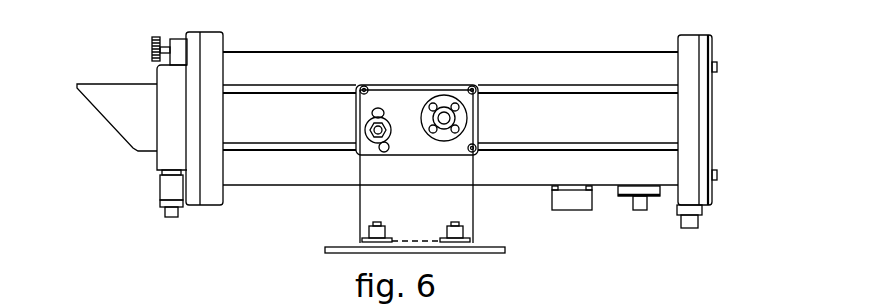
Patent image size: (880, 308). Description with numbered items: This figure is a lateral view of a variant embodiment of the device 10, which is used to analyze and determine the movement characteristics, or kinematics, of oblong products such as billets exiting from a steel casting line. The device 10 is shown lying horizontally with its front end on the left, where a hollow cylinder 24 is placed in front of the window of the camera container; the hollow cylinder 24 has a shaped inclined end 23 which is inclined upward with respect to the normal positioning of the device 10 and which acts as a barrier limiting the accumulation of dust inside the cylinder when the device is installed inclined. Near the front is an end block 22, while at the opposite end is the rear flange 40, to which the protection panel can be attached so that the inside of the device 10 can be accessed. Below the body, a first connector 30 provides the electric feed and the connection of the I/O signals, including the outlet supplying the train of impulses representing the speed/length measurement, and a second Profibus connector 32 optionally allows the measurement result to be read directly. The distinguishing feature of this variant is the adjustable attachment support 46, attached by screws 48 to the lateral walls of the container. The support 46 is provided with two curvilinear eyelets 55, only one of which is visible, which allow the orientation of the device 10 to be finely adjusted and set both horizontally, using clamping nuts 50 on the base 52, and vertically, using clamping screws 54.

The device 10 is at (561, 36).
The first end block 22 is at (193, 44).
The inclined end 23 is at (103, 123).
The hollow cylinder 24 is at (108, 97).
The first connector 30 is at (574, 198).
The second Profibus connector 32 is at (641, 200).
The rear flange 40 is at (690, 43).
The adjustable attachment support 46 is at (415, 104).
The screws 48 is at (475, 89).
The clamping nuts 50 is at (468, 233).
The base 52 is at (342, 246).
The clamping screws 54 is at (376, 140).
The curvilinear eyelets 55 is at (380, 108).